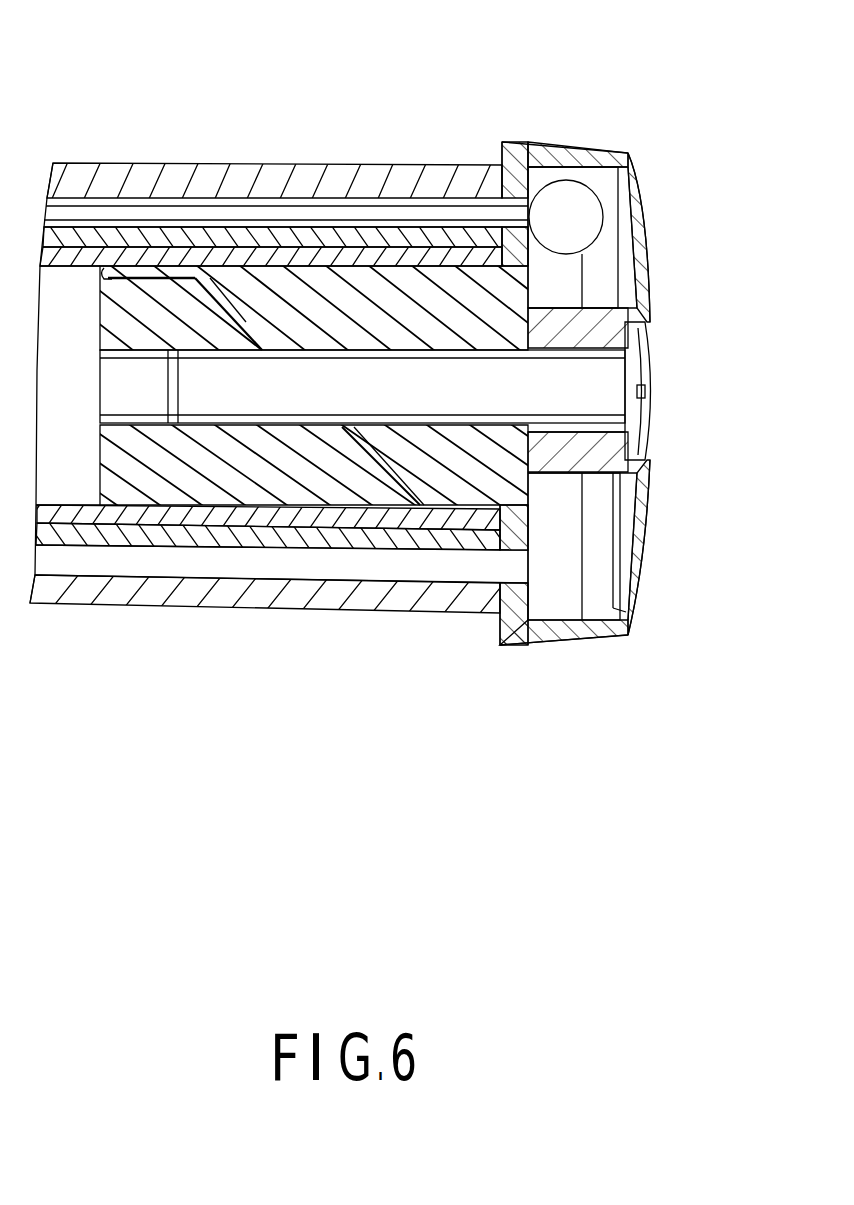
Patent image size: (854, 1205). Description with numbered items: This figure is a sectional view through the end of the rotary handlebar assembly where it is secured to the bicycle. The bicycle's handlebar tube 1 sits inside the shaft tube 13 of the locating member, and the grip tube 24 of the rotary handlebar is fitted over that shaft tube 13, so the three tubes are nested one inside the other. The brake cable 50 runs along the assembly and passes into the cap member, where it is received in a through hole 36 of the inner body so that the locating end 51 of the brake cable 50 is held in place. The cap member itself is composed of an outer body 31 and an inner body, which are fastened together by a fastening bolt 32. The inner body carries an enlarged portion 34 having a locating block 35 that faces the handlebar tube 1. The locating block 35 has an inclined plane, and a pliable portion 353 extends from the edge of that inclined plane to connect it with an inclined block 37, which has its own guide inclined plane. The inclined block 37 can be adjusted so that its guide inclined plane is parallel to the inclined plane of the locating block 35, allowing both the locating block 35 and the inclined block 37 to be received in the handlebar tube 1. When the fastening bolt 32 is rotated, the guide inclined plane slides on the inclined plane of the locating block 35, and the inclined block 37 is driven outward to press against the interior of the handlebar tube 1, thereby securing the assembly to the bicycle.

The handlebar tube 1 is at (258, 523).
The shaft tube 13 is at (138, 540).
The grip tube 24 is at (72, 163).
The outer body 31 is at (638, 222).
The fastening bolt 32 is at (640, 360).
The enlarged portion 34 is at (532, 645).
The locating block 35 is at (440, 484).
The through hole 36 is at (508, 202).
The inclined block 37 is at (192, 502).
The brake cable 50 is at (218, 208).
The locating end 51 is at (550, 202).
The pliable portion 353 is at (163, 267).